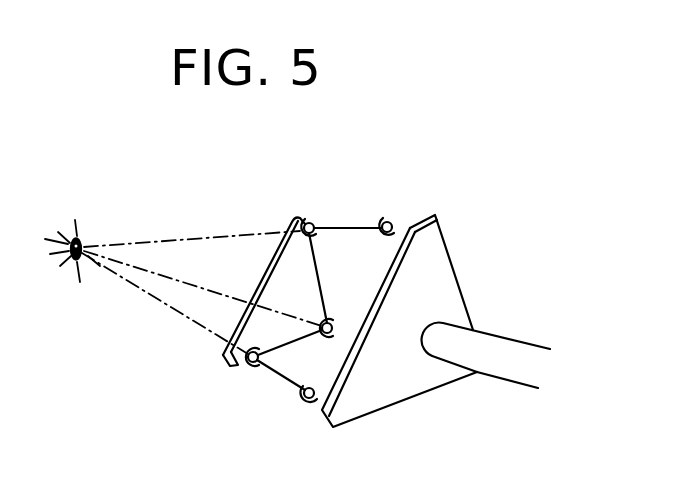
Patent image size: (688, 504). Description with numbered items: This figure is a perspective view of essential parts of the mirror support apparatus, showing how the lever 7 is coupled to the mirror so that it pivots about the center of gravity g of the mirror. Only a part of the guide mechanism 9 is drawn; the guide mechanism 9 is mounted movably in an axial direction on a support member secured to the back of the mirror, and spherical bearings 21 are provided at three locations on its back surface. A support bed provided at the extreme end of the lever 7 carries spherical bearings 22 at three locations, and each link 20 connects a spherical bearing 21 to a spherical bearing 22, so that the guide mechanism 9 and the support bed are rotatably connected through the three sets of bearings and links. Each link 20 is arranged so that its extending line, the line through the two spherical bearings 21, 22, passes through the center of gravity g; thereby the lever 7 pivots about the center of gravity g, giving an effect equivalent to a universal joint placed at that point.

The center of gravity g is at (70, 237).
The guide mechanism 9 is at (272, 250).
The link 20 is at (368, 227).
The spherical bearing 21 is at (315, 222).
The spherical bearing 22 is at (395, 219).
The lever 7 is at (514, 341).